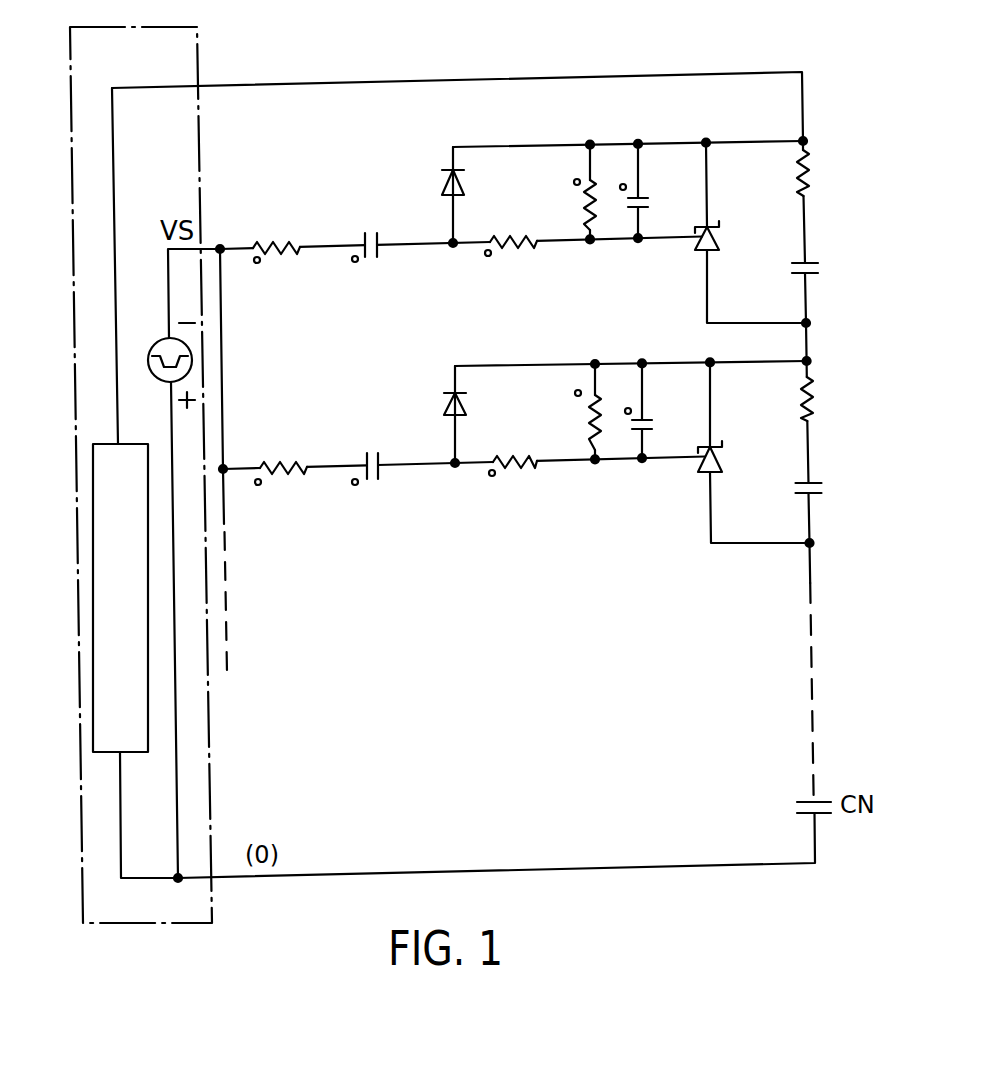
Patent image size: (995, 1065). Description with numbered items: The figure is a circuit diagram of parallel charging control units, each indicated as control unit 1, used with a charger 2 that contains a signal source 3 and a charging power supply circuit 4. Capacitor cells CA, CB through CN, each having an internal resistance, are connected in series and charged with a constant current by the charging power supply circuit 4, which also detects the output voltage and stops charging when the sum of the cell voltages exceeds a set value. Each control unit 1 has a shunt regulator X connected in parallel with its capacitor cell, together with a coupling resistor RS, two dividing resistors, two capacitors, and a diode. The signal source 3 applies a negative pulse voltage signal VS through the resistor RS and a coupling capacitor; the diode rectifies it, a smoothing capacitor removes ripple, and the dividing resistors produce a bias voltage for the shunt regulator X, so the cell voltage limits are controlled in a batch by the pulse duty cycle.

The parallel charging control unit 1 is at (386, 168).
The charger 2 is at (197, 52).
The signal source 3 is at (158, 338).
The charging power supply circuit 4 is at (131, 443).